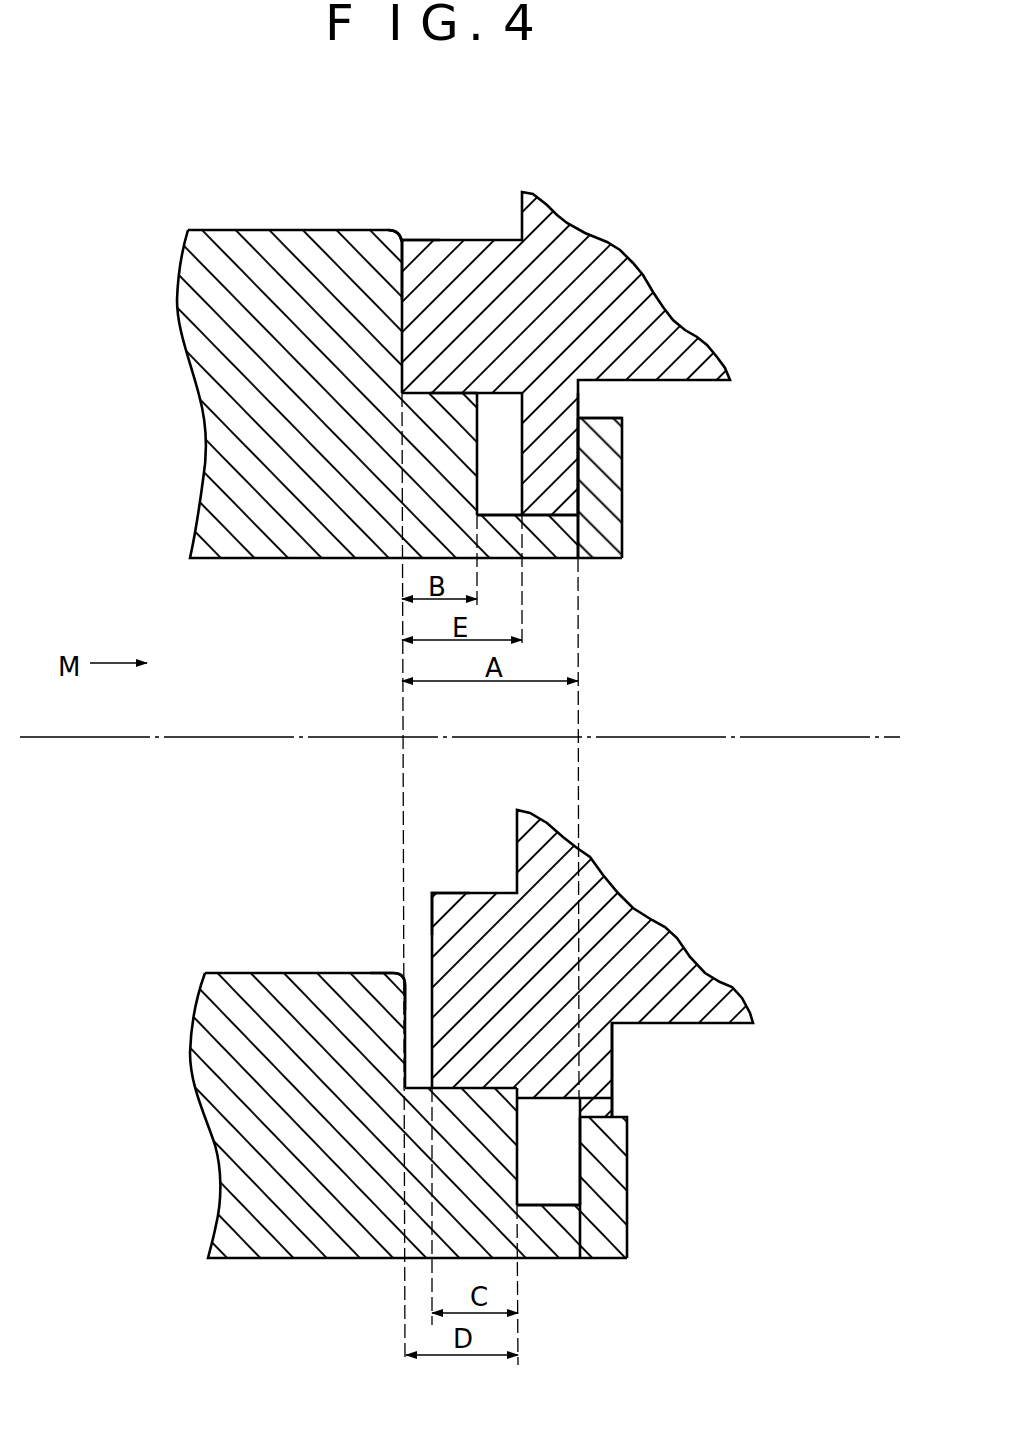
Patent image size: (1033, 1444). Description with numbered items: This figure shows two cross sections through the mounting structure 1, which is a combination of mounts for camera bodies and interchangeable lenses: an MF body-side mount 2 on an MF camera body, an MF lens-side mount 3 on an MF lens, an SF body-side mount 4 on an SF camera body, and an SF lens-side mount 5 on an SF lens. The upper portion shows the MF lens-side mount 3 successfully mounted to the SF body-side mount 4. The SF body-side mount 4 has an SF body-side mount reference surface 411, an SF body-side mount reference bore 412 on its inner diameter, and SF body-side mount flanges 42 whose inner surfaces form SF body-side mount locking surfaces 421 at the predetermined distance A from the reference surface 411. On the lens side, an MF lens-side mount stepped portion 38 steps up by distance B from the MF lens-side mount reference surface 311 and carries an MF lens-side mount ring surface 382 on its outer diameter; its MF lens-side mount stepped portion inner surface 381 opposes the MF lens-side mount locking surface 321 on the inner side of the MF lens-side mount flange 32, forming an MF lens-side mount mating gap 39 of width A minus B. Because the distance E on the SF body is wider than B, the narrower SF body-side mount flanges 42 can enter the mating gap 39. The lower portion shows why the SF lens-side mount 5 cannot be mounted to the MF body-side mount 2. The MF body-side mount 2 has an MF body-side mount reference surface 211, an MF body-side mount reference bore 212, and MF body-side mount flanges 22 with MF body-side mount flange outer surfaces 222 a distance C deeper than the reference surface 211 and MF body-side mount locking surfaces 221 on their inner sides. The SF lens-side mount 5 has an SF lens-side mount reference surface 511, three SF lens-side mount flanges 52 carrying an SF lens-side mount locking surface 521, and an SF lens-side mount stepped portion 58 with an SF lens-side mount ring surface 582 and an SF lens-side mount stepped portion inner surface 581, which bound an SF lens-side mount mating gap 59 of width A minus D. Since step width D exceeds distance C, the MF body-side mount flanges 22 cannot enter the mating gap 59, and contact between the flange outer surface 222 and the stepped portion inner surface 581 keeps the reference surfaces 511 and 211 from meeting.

The mounting structure 1 is at (690, 690).
The MF body-side mount 2 is at (692, 927).
The MF lens-side mount 3 is at (233, 222).
The SF body-side mount 4 is at (690, 297).
The SF lens-side mount 5 is at (262, 952).
The MF body-side mount flanges 22 is at (558, 1143).
The MF lens-side mount flange 32 is at (607, 487).
The MF lens-side mount stepped portion 38 is at (430, 450).
The MF lens-side mount mating gap 39 is at (503, 512).
The SF body-side mount flanges 42 is at (553, 457).
The SF lens-side mount flanges 52 is at (597, 1168).
The SF lens-side mount stepped portion 58 is at (470, 1160).
The SF lens-side mount mating gap 59 is at (568, 1210).
The MF body-side mount reference surface 211 is at (432, 935).
The MF body-side mount reference bore 212 is at (468, 1088).
The MF body-side mount locking surfaces 221 is at (612, 1105).
The MF body-side mount flange outer surfaces 222 is at (517, 1123).
The MF lens-side mount reference surface 311 is at (403, 313).
The MF lens-side mount locking surface 321 is at (577, 506).
The MF lens-side mount stepped portion inner surface 381 is at (477, 490).
The MF lens-side mount ring surface 382 is at (437, 393).
The SF body-side mount reference surface 411 is at (401, 300).
The SF body-side mount reference bore 412 is at (427, 395).
The SF body-side mount locking surfaces 421 is at (578, 432).
The SF lens-side mount reference surface 511 is at (405, 1007).
The SF lens-side mount locking surface 521 is at (582, 1190).
The SF lens-side mount stepped portion inner surface 581 is at (520, 1182).
The SF lens-side mount ring surface 582 is at (460, 1090).